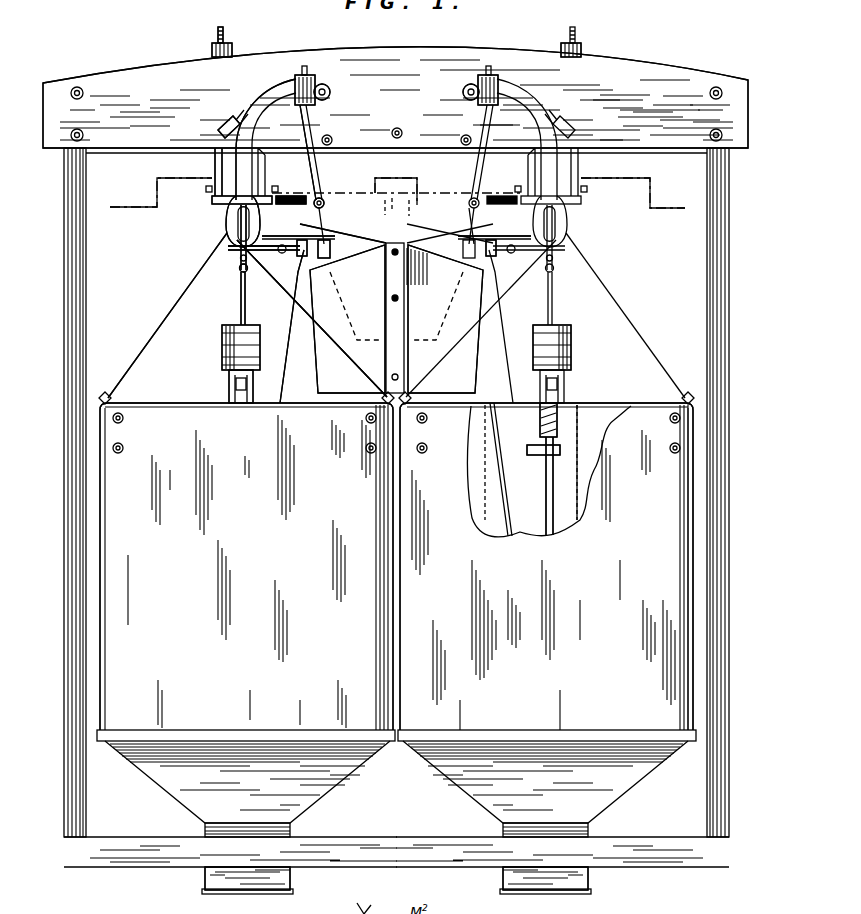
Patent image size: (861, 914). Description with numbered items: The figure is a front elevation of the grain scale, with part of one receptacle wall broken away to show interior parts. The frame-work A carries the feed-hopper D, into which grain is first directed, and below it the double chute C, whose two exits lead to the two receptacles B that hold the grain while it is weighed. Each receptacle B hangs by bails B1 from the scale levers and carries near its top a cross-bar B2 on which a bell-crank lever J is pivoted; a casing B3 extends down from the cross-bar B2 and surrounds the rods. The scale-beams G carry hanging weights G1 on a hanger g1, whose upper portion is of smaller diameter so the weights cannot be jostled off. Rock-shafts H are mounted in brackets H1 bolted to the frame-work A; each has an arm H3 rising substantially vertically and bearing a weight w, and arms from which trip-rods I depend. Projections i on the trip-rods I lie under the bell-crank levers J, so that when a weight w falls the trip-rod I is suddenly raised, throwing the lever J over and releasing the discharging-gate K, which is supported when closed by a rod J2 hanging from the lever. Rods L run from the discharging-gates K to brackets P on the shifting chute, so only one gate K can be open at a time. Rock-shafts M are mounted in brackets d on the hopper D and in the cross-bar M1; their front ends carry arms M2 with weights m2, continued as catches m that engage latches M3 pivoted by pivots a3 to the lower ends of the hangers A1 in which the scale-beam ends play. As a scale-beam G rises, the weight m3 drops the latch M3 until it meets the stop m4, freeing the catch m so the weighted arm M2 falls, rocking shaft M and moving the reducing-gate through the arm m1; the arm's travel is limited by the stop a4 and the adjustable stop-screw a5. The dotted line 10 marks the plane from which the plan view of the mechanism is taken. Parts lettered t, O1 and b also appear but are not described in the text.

The frame-work A is at (146, 76).
The weighted arm H3 is at (229, 40).
The weight w is at (210, 50).
The weight m2 is at (316, 78).
The stop a4 is at (331, 93).
The adjustable stop-screw a5 is at (228, 124).
The hanger A1 is at (245, 145).
The weighted arm M2 is at (313, 136).
The rock-shaft H is at (216, 173).
The bracket H1 is at (604, 213).
The cross-bar M1 is at (300, 193).
The rock-shaft M is at (321, 198).
The feed-hopper D is at (396, 185).
The dotted line 10 is at (397, 199).
The bracket d is at (327, 212).
The arm m1 is at (309, 212).
The weight m3 is at (306, 256).
The catch m is at (330, 240).
The bracket P is at (290, 236).
The trip lever t is at (234, 248).
The bar O1 is at (495, 236).
The stop m4 is at (573, 240).
The latch M3 is at (589, 250).
The pivot a3 is at (500, 284).
The projection i is at (282, 277).
The trip-rod I is at (247, 290).
The hanger g1 is at (239, 318).
The bail B1 is at (168, 312).
The rod L is at (289, 358).
The scale-beam G is at (222, 351).
The hanging weight G1 is at (571, 353).
The double chute C is at (396, 319).
The bell-crank lever J is at (229, 386).
The receptacle B is at (396, 566).
The cross-bar B2 is at (540, 426).
The casing B3 is at (579, 426).
The nut b is at (534, 456).
The rod J2 is at (553, 482).
The discharging-gate K is at (245, 892).